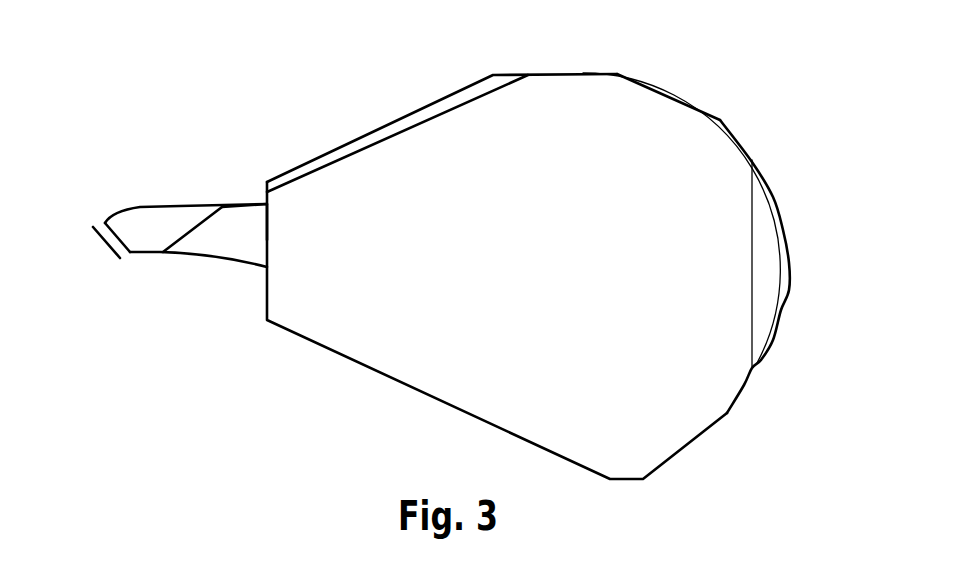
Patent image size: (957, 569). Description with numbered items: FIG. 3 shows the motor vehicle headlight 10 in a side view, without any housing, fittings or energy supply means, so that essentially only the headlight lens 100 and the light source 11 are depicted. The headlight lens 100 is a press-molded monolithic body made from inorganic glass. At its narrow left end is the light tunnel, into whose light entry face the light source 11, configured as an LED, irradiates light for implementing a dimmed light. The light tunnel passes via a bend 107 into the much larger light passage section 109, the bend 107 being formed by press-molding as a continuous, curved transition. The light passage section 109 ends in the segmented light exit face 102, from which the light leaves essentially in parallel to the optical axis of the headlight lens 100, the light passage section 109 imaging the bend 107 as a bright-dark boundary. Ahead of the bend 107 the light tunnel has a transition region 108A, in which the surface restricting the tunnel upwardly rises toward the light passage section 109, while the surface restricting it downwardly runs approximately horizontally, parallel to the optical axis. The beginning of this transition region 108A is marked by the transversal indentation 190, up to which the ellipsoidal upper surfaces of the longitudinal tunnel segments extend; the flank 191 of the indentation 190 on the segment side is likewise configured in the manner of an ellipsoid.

The motor vehicle headlight 10 is at (250, 369).
The light source 11 is at (104, 232).
The headlight lens 100 is at (187, 273).
The light exit face 102 is at (782, 193).
The bend 107 is at (266, 269).
The transition region 108A is at (238, 220).
The light passage section 109 is at (403, 152).
The transversal indentation 190 is at (222, 207).
The flank 191 is at (189, 205).